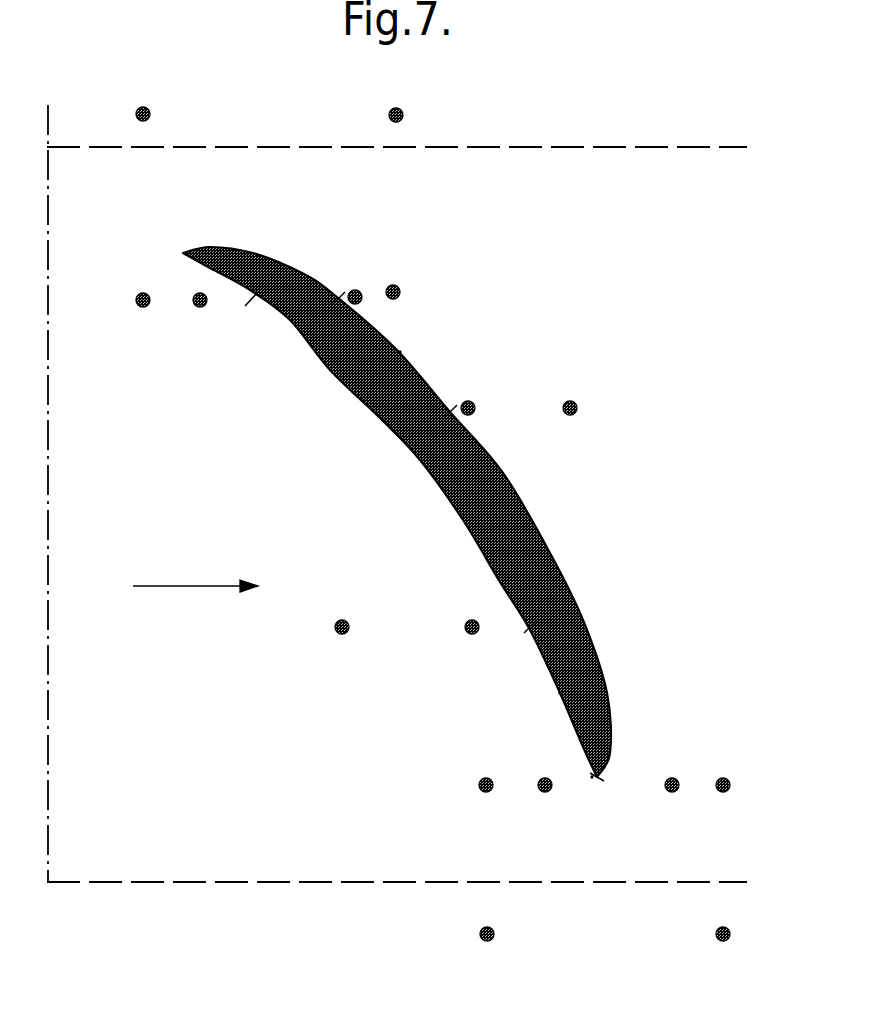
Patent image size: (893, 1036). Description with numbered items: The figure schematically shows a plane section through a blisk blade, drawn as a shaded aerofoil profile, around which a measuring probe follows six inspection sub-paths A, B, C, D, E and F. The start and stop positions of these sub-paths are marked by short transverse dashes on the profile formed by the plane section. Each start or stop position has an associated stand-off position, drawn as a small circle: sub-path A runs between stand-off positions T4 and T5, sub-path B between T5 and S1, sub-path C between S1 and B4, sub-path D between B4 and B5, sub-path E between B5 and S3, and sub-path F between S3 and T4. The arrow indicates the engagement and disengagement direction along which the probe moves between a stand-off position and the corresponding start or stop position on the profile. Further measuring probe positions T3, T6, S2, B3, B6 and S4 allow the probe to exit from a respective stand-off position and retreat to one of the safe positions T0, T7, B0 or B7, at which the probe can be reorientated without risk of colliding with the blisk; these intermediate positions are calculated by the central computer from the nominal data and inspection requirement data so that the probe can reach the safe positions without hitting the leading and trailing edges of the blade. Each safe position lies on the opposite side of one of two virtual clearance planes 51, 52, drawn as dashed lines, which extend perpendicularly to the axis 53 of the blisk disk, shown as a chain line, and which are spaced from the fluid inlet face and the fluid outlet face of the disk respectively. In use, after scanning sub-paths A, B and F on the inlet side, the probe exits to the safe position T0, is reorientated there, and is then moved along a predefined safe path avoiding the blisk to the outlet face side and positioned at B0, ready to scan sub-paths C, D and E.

The virtual clearance plane 51 is at (597, 145).
The virtual clearance plane 52 is at (163, 880).
The axis of the blisk disk 53 is at (47, 522).
The inspection sub-path A is at (257, 255).
The inspection sub-path B is at (383, 420).
The inspection sub-path C is at (560, 693).
The inspection sub-path D is at (592, 777).
The inspection sub-path E is at (553, 560).
The inspection sub-path F is at (400, 352).
The safe position T0 is at (397, 100).
The measuring probe position T3 is at (408, 292).
The stand-off position T4 is at (355, 283).
The stand-off position T5 is at (199, 318).
The measuring probe position T6 is at (143, 318).
The safe position T7 is at (145, 99).
The stand-off position S1 is at (472, 644).
The measuring probe position S2 is at (342, 644).
The stand-off position S3 is at (469, 394).
The measuring probe position S4 is at (570, 394).
The safe position B0 is at (486, 950).
The measuring probe position B3 is at (486, 771).
The stand-off position B4 is at (544, 771).
The stand-off position B5 is at (672, 771).
The measuring probe position B6 is at (723, 771).
The safe position B7 is at (725, 950).